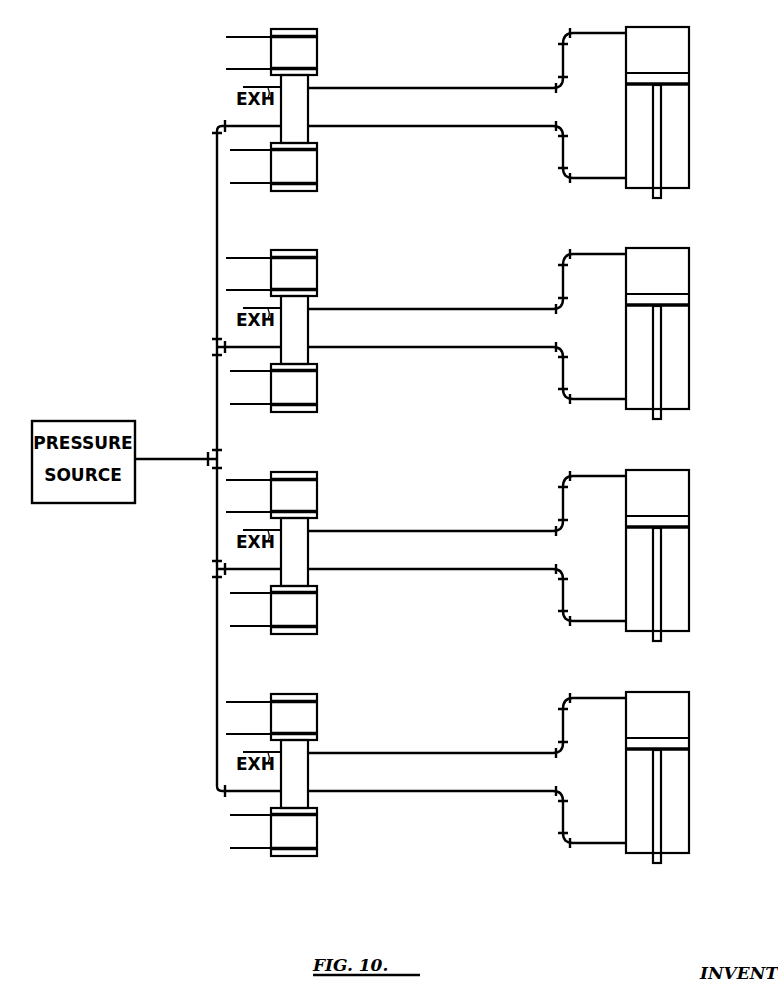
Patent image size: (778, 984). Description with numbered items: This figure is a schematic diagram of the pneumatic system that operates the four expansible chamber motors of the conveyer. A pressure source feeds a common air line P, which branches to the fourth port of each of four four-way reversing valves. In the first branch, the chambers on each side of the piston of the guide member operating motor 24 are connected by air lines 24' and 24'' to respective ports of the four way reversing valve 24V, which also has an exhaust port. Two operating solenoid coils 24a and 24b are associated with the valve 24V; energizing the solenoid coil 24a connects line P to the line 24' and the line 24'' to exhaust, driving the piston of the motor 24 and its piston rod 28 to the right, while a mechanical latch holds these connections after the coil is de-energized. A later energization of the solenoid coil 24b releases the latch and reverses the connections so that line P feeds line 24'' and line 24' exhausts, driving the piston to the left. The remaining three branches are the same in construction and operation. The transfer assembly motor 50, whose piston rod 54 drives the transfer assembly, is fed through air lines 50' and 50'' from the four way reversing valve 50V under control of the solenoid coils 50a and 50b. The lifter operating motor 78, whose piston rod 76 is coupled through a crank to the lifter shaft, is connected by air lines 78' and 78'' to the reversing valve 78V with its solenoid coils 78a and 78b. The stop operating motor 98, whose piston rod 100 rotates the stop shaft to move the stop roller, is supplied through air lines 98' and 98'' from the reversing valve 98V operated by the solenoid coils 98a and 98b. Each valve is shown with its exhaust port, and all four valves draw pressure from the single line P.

The air line to source of pressure P is at (213, 243).
The operating solenoid coil 24a is at (318, 65).
The operating solenoid coil 24b is at (318, 180).
The four way reversing valve 24V is at (308, 106).
The air line 24' is at (467, 60).
The air line 24'' is at (467, 152).
The expansible chamber motor 24 is at (675, 107).
The piston rod 28 is at (661, 195).
The operating solenoid coil 50a is at (318, 286).
The operating solenoid coil 50b is at (318, 401).
The four way reversing valve 50V is at (308, 327).
The air line 50' is at (467, 281).
The air line 50'' is at (467, 373).
The expansible chamber motor 50 is at (675, 328).
The piston rod 54 is at (661, 416).
The operating solenoid coil 78a is at (318, 508).
The operating solenoid coil 78b is at (318, 623).
The four way reversing valve 78V is at (308, 549).
The air line 78' is at (467, 503).
The air line 78'' is at (467, 595).
The expansible chamber motor 78 is at (675, 550).
The piston rod 76 is at (661, 638).
The operating solenoid coil 98a is at (318, 730).
The operating solenoid coil 98b is at (318, 845).
The four way reversing valve 98V is at (308, 771).
The air line 98' is at (467, 725).
The air line 98'' is at (467, 817).
The expansible chamber motor 98 is at (675, 772).
The piston rod 100 is at (661, 860).